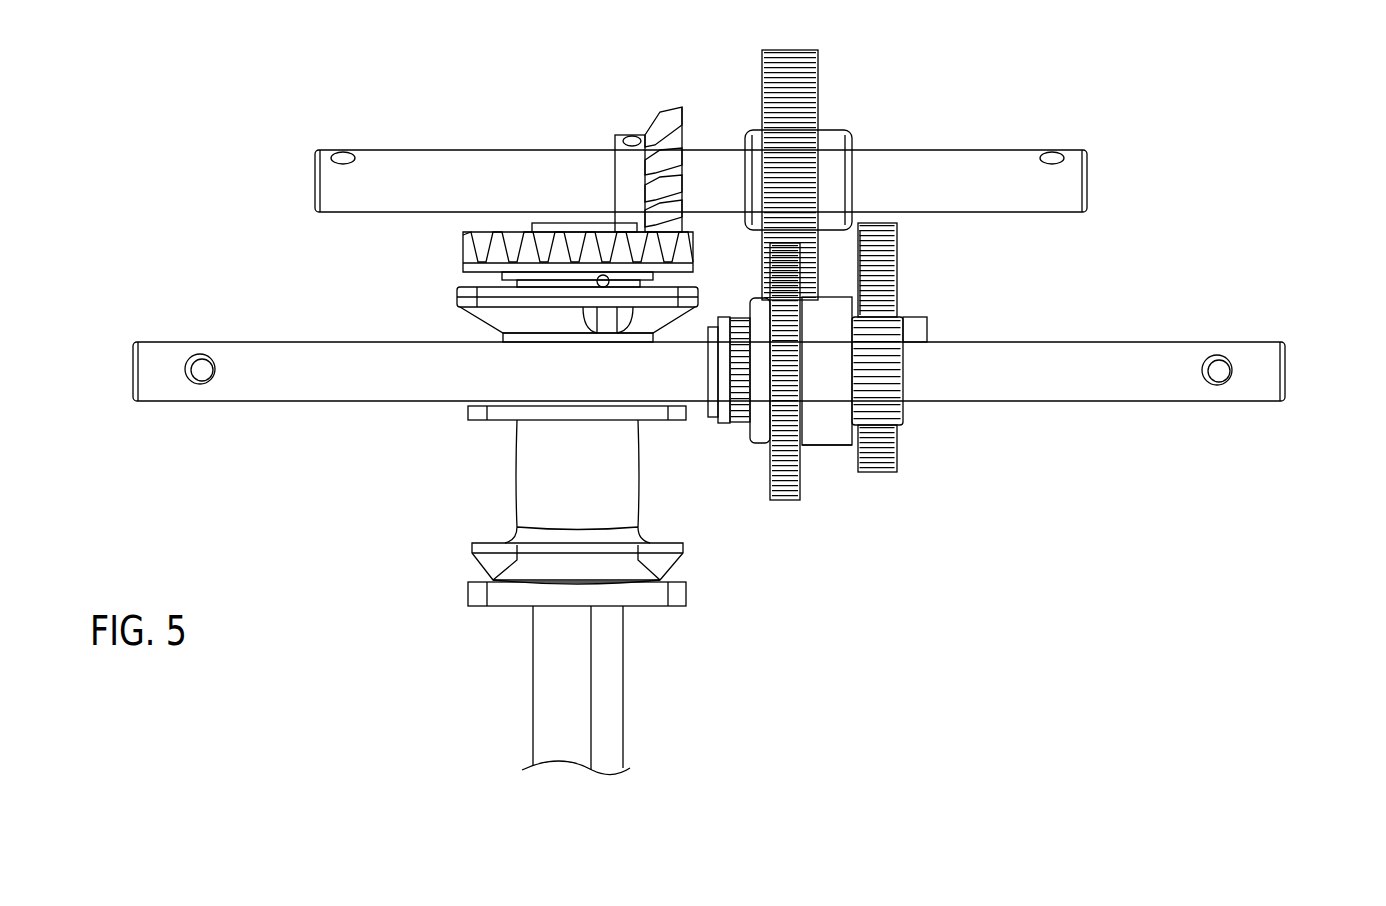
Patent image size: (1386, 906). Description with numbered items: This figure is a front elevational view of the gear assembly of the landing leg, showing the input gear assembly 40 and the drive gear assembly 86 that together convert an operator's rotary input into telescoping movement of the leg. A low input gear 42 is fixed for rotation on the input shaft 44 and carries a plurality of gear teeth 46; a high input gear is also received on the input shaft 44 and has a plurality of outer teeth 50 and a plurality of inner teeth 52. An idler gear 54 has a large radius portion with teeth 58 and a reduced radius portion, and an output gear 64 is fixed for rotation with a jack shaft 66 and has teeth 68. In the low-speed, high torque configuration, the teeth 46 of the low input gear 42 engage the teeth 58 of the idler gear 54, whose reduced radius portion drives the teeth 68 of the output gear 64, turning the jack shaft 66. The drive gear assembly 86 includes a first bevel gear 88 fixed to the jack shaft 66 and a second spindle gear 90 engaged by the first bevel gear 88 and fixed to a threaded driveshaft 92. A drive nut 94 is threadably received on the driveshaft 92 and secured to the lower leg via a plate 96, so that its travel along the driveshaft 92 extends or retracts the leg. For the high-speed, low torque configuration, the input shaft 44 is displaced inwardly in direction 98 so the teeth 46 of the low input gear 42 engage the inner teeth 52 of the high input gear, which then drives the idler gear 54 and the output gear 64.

The input gear assembly 40 is at (828, 505).
The low input gear 42 is at (906, 428).
The input shaft 44 is at (1162, 345).
The gear teeth 46 is at (888, 400).
The outer teeth 50 is at (768, 490).
The inner teeth 52 is at (780, 466).
The idler gear 54 is at (905, 250).
The teeth 58 is at (885, 284).
The output gear 64 is at (822, 72).
The jack shaft 66 is at (1005, 158).
The teeth 68 is at (800, 118).
The drive gear assembly 86 is at (583, 125).
The first bevel gear 88 is at (668, 120).
The second spindle gear 90 is at (465, 252).
The threaded driveshaft 92 is at (617, 702).
The drive nut 94 is at (483, 557).
The plate 96 is at (505, 600).
The direction 98 is at (1380, 368).